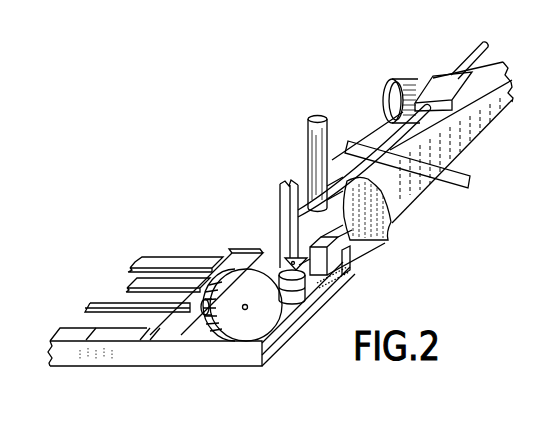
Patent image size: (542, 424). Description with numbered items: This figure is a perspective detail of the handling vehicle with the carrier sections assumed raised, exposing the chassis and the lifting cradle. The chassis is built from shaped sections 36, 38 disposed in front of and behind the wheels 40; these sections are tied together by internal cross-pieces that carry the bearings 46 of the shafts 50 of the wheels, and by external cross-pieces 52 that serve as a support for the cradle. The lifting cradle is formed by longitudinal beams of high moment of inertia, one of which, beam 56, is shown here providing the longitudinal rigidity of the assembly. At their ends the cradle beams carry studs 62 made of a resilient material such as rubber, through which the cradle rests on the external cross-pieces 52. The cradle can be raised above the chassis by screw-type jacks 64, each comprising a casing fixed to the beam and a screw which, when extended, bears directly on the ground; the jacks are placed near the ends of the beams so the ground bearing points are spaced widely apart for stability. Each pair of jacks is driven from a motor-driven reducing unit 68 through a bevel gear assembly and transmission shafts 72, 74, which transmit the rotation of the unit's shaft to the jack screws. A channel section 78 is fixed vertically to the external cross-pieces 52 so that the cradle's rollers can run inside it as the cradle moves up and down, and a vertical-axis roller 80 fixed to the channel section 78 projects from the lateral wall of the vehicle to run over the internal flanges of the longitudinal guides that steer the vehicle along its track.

The shaped section 36 is at (160, 259).
The shaped section 38 is at (117, 357).
The wheel 40 is at (230, 355).
The bearing 46 is at (183, 352).
The shaft 50 is at (108, 305).
The external cross-piece 52 is at (283, 333).
The longitudinal beam 56 is at (416, 188).
The stud 62 is at (350, 262).
The jack 64 is at (357, 227).
The motor-driven reducing unit 68 is at (410, 78).
The transmission shaft 72 is at (482, 50).
The transmission shaft 74 is at (391, 224).
The channel section 78 is at (283, 220).
The roller 80 is at (307, 310).